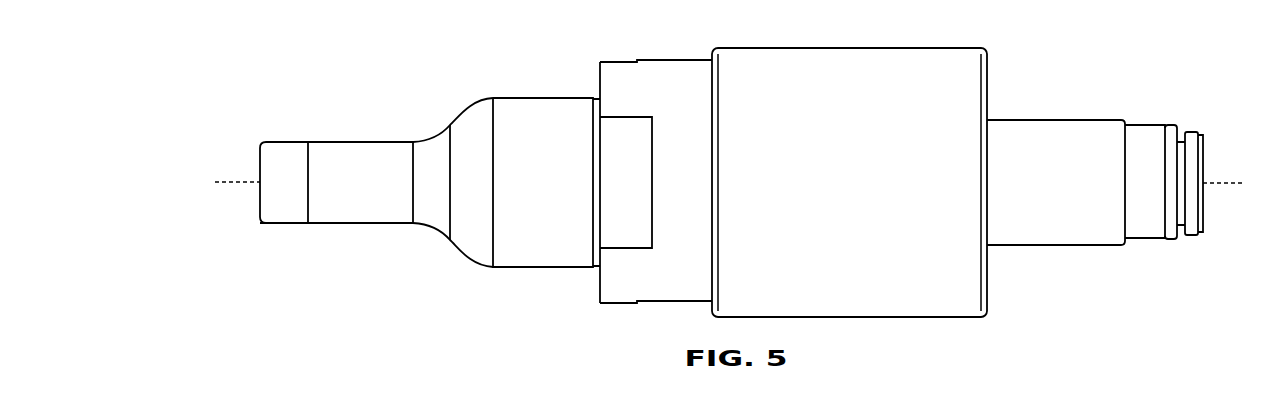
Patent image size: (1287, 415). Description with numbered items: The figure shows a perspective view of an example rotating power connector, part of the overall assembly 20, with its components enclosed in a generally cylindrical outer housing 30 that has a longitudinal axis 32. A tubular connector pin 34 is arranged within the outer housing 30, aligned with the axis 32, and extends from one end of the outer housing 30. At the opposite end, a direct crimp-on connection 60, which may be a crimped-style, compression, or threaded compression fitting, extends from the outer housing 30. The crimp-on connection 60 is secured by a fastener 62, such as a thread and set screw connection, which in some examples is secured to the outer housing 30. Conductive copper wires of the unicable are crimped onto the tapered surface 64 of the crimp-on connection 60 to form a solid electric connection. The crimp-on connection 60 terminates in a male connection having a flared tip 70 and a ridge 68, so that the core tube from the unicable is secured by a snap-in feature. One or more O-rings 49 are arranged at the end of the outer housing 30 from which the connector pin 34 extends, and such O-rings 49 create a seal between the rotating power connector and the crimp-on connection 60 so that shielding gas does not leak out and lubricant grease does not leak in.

The shaft assembly 20 is at (288, 22).
The outer housing 30 is at (849, 48).
The longitudinal axis 32 is at (240, 194).
The connector pin 34 is at (1053, 120).
The O-rings 49 is at (1185, 116).
The direct crimp-on connection 60 is at (441, 110).
The fastener 62 is at (676, 62).
The tapered surface 64 is at (543, 98).
The ridge 68 is at (296, 134).
The flared tip 70 is at (280, 230).